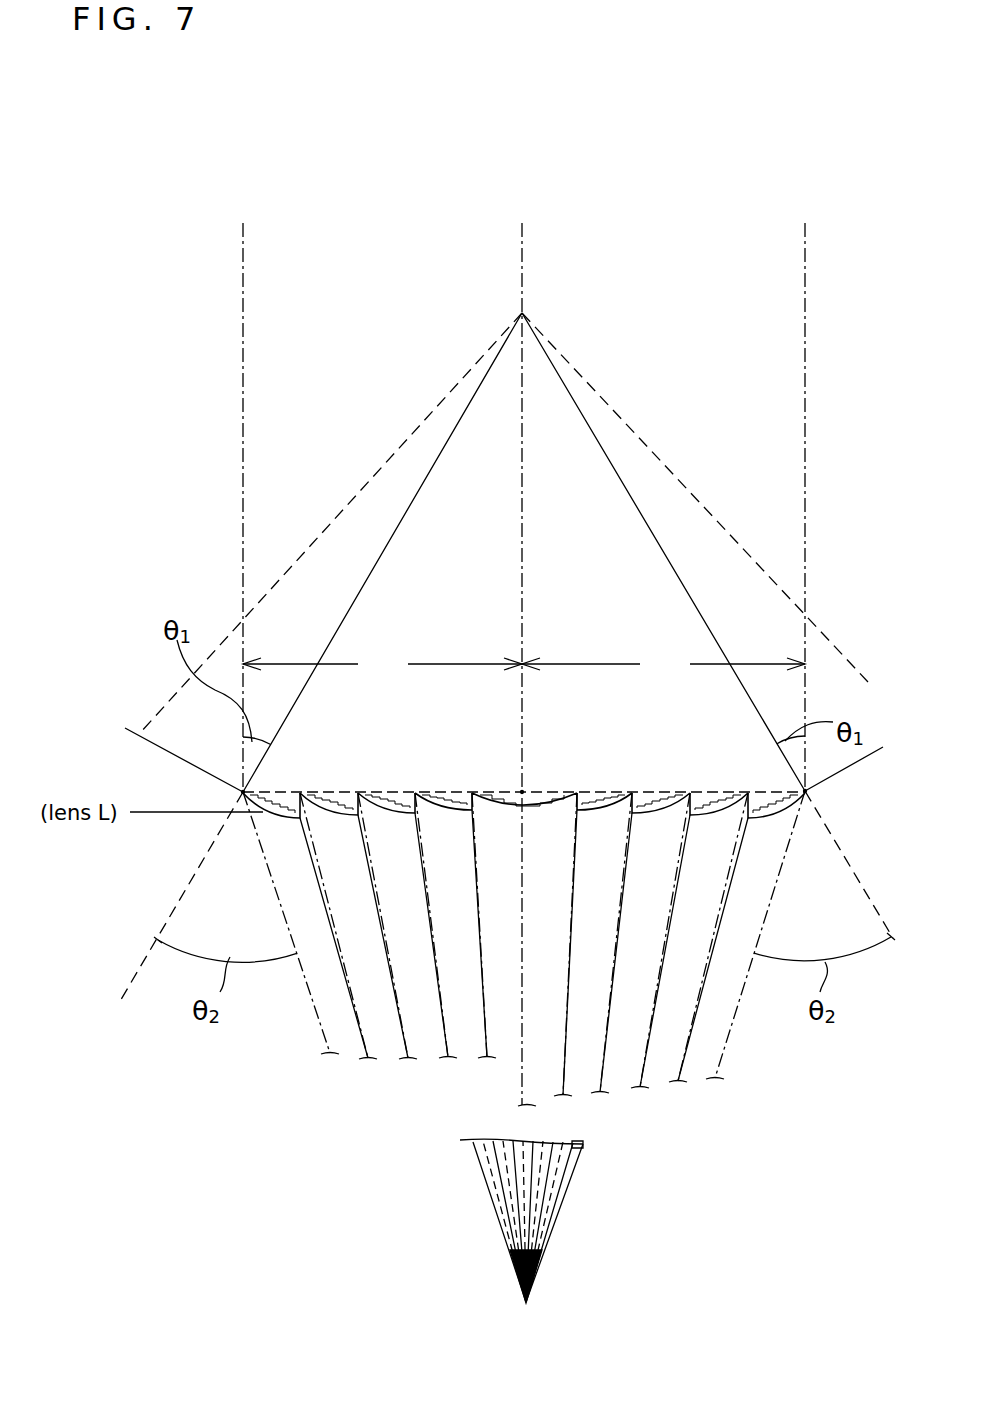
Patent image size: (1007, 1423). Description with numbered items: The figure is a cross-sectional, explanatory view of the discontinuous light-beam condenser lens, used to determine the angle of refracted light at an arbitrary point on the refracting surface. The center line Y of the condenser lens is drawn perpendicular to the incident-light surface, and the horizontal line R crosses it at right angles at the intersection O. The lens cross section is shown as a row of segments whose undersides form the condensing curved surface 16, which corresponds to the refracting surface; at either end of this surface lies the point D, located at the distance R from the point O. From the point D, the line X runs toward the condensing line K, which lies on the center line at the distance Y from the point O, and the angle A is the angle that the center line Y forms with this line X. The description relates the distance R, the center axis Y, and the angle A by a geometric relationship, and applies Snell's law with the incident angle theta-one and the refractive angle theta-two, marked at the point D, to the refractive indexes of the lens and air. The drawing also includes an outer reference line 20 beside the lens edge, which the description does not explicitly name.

The condensing curved surface 16 is at (780, 812).
The reference axis line 20 is at (807, 583).
The angle A is at (580, 1143).
The condensing line K is at (526, 1299).
The point D is at (522, 795).
The intersection O is at (537, 777).
The line X is at (734, 1060).
The center line Y is at (534, 664).
The horizontal line R is at (524, 668).